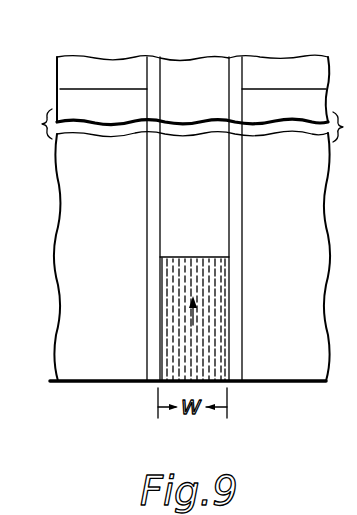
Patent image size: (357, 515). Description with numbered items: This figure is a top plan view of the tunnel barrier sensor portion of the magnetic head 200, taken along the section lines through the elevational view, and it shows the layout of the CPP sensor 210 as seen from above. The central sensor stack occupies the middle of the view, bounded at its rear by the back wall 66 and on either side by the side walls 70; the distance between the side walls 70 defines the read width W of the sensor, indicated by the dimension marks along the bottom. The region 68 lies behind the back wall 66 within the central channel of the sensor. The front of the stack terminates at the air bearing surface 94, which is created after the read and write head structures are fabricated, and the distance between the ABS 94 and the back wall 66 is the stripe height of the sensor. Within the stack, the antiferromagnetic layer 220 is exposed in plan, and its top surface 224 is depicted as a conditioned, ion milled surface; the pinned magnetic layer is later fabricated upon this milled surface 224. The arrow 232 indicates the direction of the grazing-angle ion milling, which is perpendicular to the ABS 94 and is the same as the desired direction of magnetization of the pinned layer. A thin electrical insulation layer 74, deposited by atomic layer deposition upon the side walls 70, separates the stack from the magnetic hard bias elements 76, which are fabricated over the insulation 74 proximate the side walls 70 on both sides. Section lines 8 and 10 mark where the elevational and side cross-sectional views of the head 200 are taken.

The magnetic head 200 is at (88, 51).
The CPP sensor 210 is at (141, 51).
The section lines 10- 10 is at (195, 57).
The section lines 8- 8 is at (100, 416).
The gate region 68 is at (212, 177).
The magnetic hard bias elements 76 is at (120, 228).
The back wall 66 is at (190, 257).
The antiferromagnetic (AFM) layer 220 is at (165, 272).
The ion milled surface of the AFM layer 224 is at (168, 300).
The side walls 70 is at (160, 330).
The electrical insulation layer 74 is at (150, 355).
The ion milling direction arrow 232 is at (193, 325).
The air bearing surface (ABS) 94 is at (108, 386).